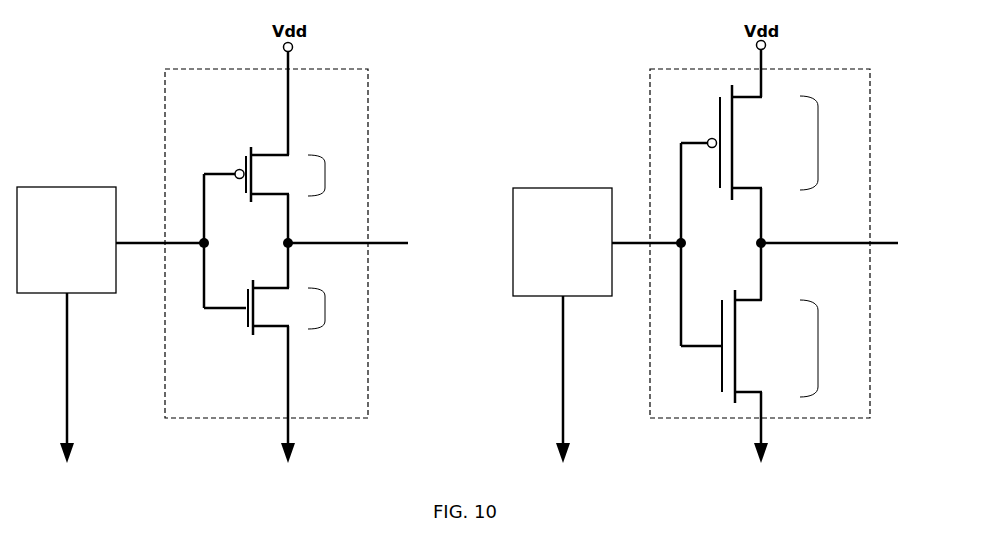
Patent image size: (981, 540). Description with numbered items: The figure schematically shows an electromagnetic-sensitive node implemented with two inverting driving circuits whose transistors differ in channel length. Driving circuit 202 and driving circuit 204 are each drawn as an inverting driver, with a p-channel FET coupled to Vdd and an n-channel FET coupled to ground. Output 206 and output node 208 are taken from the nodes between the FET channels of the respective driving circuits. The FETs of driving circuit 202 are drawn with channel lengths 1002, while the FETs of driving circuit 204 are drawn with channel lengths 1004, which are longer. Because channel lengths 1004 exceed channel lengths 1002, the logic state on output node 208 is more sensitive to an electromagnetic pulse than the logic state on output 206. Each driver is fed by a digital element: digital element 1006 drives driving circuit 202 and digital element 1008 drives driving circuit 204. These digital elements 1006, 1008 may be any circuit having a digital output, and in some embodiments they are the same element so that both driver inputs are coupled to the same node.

The driving circuit 202 is at (187, 67).
The driving circuit 204 is at (677, 67).
The output 206 is at (377, 243).
The output node 208 is at (824, 243).
The channel lengths 1002 is at (329, 175).
The channel lengths 1004 is at (820, 148).
The digital element 1006 is at (66, 187).
The digital element 1008 is at (562, 188).